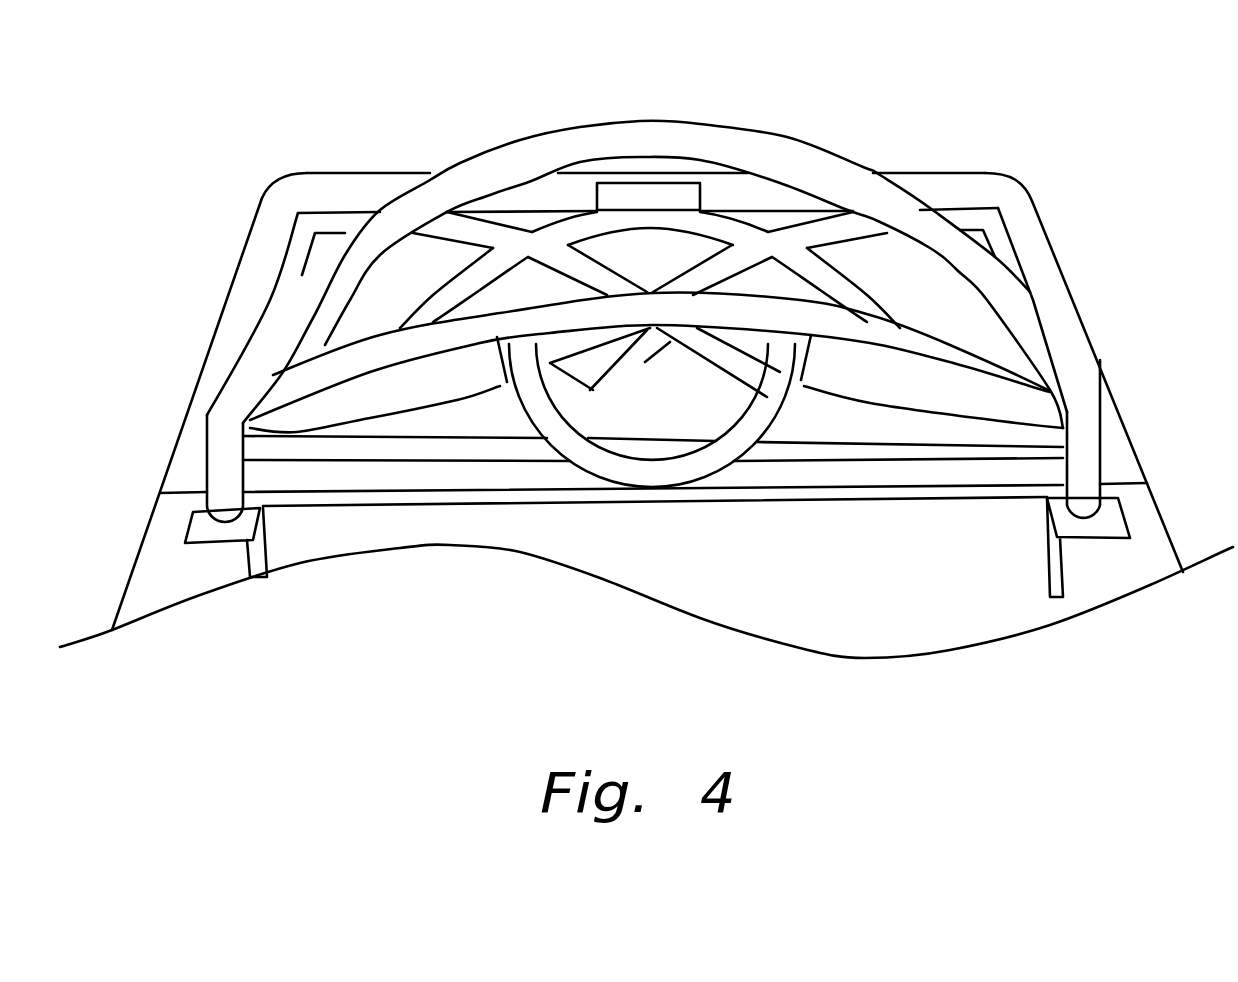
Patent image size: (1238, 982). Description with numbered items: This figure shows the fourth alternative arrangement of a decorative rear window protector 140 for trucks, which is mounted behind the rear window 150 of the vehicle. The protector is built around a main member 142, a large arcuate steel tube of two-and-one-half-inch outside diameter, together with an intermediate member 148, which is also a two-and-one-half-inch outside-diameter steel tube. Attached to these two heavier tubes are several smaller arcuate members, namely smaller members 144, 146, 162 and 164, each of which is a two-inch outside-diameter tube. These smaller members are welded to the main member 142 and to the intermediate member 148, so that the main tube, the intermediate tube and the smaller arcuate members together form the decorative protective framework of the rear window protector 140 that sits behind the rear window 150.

The rear window protector 140 is at (482, 142).
The main member 142 is at (793, 165).
The smaller member 144 is at (713, 462).
The smaller member 146 is at (653, 220).
The intermediate member 148 is at (958, 343).
The rear window 150 is at (957, 207).
The smaller member 162 is at (913, 426).
The smaller member 164 is at (905, 262).